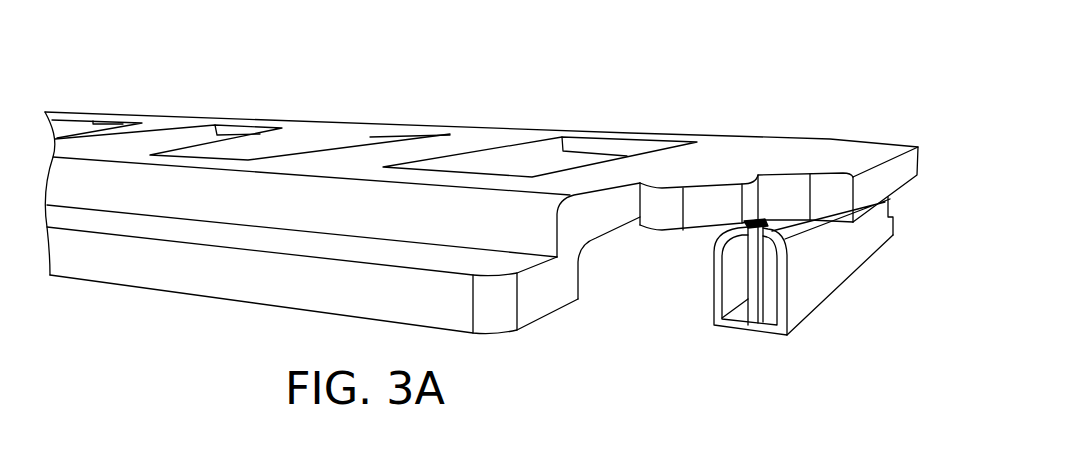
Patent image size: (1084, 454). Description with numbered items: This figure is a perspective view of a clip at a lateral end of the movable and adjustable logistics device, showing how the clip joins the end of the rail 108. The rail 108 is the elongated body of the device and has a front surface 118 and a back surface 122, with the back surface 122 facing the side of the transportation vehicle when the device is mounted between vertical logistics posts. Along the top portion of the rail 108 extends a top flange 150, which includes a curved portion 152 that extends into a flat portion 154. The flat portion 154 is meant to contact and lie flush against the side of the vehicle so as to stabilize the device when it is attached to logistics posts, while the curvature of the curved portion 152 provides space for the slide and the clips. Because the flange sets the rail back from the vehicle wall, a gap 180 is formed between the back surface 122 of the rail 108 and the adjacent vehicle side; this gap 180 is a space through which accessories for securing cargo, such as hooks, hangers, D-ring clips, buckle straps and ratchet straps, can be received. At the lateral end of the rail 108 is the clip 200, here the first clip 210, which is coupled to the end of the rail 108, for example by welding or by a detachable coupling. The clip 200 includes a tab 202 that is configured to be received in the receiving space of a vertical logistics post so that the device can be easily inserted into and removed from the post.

The rail 108 is at (456, 145).
The front surface 118 is at (310, 91).
The back surface 122 is at (623, 250).
The top flange 150 is at (306, 334).
The curved portion 152 is at (300, 211).
The flat portion 154 is at (311, 293).
The gap 180 is at (602, 288).
The clip 200 is at (872, 109).
The tab 202 is at (800, 302).
The first clip 210 is at (911, 236).